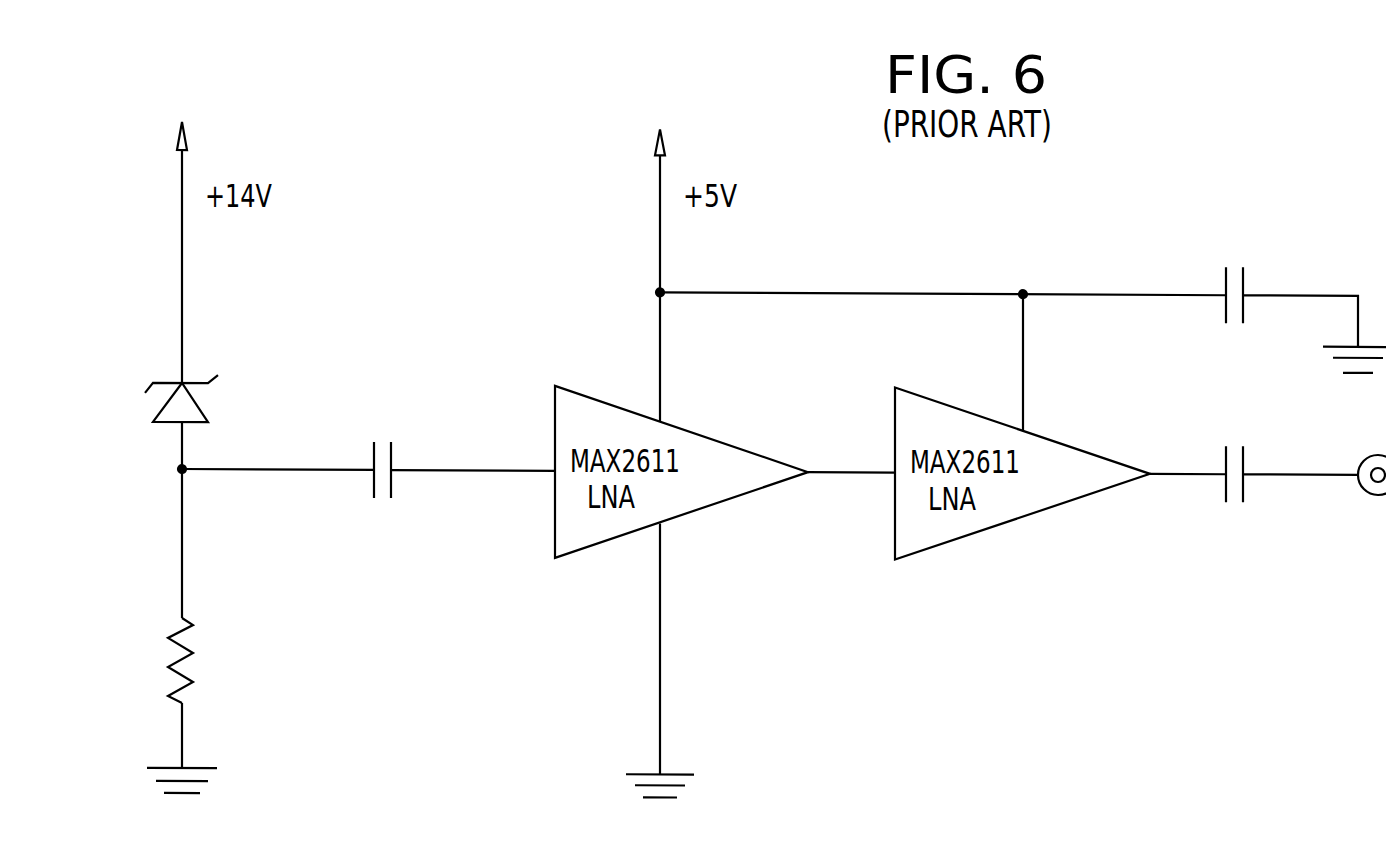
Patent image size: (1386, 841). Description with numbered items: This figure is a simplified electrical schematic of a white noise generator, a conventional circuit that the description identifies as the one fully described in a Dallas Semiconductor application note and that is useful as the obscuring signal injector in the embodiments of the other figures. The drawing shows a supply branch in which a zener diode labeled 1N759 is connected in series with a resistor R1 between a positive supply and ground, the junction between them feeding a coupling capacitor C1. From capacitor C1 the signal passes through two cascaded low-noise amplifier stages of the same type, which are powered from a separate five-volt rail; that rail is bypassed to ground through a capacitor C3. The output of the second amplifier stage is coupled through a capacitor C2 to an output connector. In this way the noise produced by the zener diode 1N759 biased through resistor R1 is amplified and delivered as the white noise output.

The zener diode 1N759 is at (227, 401).
The resistor R1 is at (151, 660).
The coupling capacitor C1 is at (383, 497).
The output coupling capacitor C2 is at (1233, 500).
The bypass capacitor C3 is at (1233, 320).